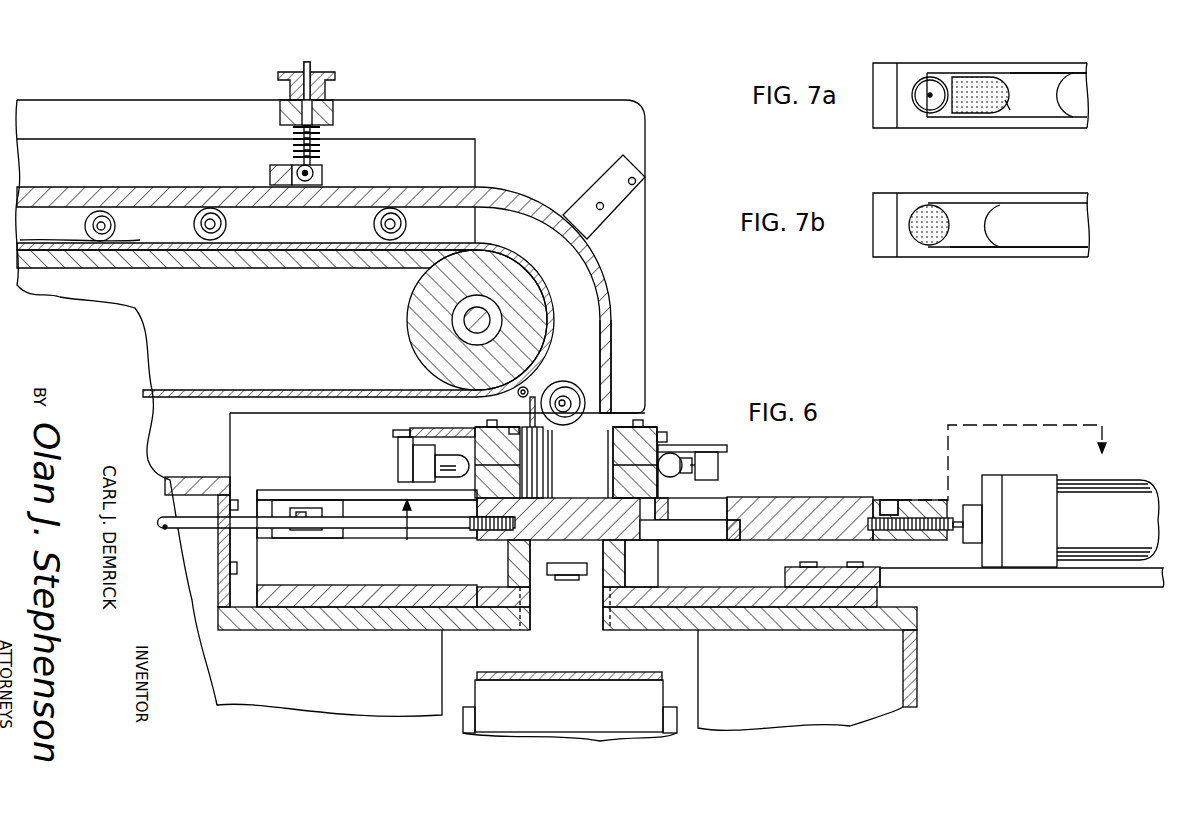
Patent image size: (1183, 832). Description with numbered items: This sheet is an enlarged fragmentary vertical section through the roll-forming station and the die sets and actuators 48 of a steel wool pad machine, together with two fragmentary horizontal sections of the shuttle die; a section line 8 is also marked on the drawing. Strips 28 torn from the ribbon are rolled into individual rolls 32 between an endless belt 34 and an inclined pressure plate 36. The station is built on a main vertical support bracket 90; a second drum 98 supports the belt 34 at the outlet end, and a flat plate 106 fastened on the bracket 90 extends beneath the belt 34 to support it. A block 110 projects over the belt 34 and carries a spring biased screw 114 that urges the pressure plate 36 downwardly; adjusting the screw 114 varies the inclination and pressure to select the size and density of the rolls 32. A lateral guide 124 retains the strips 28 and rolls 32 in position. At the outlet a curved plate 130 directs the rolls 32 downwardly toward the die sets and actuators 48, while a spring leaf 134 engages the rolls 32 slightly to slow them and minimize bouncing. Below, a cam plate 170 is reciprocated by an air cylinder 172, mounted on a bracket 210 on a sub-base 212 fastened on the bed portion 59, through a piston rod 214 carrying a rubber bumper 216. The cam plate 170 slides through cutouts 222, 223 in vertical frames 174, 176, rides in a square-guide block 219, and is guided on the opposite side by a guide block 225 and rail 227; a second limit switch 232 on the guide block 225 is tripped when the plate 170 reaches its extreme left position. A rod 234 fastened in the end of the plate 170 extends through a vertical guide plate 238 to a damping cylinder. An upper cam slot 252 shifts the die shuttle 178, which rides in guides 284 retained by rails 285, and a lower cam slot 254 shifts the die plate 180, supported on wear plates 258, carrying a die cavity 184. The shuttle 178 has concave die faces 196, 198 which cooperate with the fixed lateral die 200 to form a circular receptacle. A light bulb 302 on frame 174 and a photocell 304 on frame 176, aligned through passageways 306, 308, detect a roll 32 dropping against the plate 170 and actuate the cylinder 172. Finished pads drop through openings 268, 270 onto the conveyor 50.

In FIG. 6, the section line 8 is at (754, 498).
In FIG. 6, the strips 28 is at (60, 240).
In FIG. 6, the rolls 32 is at (407, 222).
In FIG. 7a, the rolls 32 is at (982, 110).
In FIG. 7b, the rolls 32 is at (920, 208).
In FIG. 6, the endless belt 34 is at (233, 390).
In FIG. 6, the inclined pressure plate 36 is at (165, 198).
In FIG. 6, the die sets and die actuators 48 is at (720, 486).
In FIG. 6, the endless belt conveyor 50 is at (577, 672).
In FIG. 6, the bed portion 59 is at (348, 622).
In FIG. 6, the main vertical support bracket 90 is at (380, 100).
In FIG. 6, the second drum 98 is at (408, 323).
In FIG. 6, the flat plate 106 is at (245, 268).
In FIG. 6, the block 110 is at (333, 100).
In FIG. 6, the spring biased screw 114 is at (312, 68).
In FIG. 6, the lateral guide 124 is at (477, 160).
In FIG. 6, the curved plate 130 is at (612, 292).
In FIG. 6, the spring leaf 134 is at (527, 400).
In FIG. 6, the cam plate 170 is at (798, 503).
In FIG. 6, the air cylinder 172 is at (1115, 480).
In FIG. 6, the vertical frame 174 is at (662, 432).
In FIG. 6, the vertical frame 176 is at (455, 427).
In FIG. 7a, the die shuttle 178 is at (1035, 82).
In FIG. 7b, the die shuttle 178 is at (970, 238).
In FIG. 6, the die plate 180 is at (657, 553).
In FIG. 7a, the die cavity 184 is at (933, 82).
In FIG. 7a, the first die face 196 is at (1007, 105).
In FIG. 7a, the second die face 198 is at (1052, 92).
In FIG. 7b, the second die face 198 is at (993, 218).
In FIG. 7a, the first fixed lateral die 200 is at (905, 70).
In FIG. 7b, the first fixed lateral die 200 is at (917, 250).
In FIG. 6, the bracket 210 is at (1003, 568).
In FIG. 6, the sub-base 212 is at (880, 598).
In FIG. 6, the piston rod 214 is at (947, 515).
In FIG. 6, the rubber bumper 216 is at (915, 545).
In FIG. 6, the square-guide block 219 is at (872, 553).
In FIG. 6, the rectangular cutout 222 is at (652, 573).
In FIG. 6, the rectangular cutout 223 is at (480, 553).
In FIG. 6, the guide block 225 is at (297, 600).
In FIG. 6, the rail 227 is at (340, 490).
In FIG. 6, the second limit switch 232 is at (302, 500).
In FIG. 6, the rod 234 is at (207, 530).
In FIG. 6, the vertical guide plate 238 is at (232, 584).
In FIG. 6, the upper cam slot 252 is at (715, 505).
In FIG. 6, the lower cam slot 254 is at (723, 542).
In FIG. 6, the wear plate 258 is at (603, 573).
In FIG. 6, the elongated opening 268 is at (537, 597).
In FIG. 6, the elongated opening 270 is at (537, 620).
In FIG. 6, the guide 284 is at (520, 432).
In FIG. 6, the rail 285 is at (650, 430).
In FIG. 7a, the rail 285 is at (1017, 68).
In FIG. 7b, the rail 285 is at (1042, 200).
In FIG. 6, the light bulb 302 is at (691, 509).
In FIG. 6, the photocell 304 is at (450, 457).
In FIG. 6, the passageway 306 is at (620, 468).
In FIG. 6, the passageway 308 is at (513, 460).